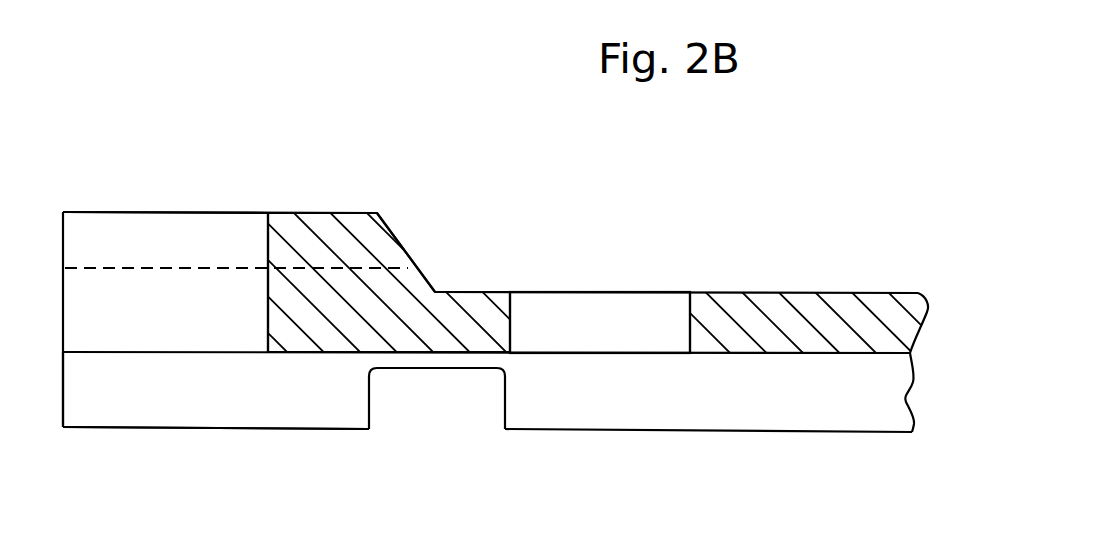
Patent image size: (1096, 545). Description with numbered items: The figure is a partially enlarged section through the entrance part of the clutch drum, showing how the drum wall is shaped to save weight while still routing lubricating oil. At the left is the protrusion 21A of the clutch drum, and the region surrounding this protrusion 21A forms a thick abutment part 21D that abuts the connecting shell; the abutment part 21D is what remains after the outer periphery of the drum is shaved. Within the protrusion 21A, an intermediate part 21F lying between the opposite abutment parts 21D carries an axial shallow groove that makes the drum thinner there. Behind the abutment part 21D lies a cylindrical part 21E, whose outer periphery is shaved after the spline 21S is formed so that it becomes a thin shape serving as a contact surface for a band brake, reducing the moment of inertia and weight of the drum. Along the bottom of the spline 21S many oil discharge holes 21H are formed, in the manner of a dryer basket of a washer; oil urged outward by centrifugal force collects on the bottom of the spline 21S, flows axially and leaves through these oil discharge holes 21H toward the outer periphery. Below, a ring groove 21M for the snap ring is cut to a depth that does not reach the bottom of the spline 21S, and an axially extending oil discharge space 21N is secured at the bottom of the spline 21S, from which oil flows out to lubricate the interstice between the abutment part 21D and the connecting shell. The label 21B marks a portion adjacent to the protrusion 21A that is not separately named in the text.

The protrusion 21A is at (125, 212).
The bonding region 21B is at (178, 237).
The abutment part 21D is at (345, 213).
The intermediate part 21F is at (400, 268).
The oil discharge holes 21H is at (567, 310).
The cylindrical part 21E is at (753, 292).
The spline 21S is at (228, 405).
The oil discharge space 21N is at (405, 359).
The ring groove 21M is at (370, 397).